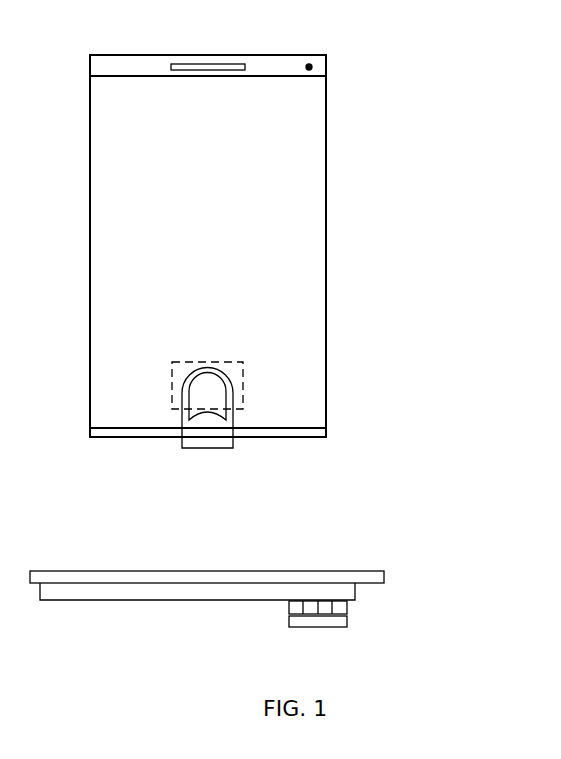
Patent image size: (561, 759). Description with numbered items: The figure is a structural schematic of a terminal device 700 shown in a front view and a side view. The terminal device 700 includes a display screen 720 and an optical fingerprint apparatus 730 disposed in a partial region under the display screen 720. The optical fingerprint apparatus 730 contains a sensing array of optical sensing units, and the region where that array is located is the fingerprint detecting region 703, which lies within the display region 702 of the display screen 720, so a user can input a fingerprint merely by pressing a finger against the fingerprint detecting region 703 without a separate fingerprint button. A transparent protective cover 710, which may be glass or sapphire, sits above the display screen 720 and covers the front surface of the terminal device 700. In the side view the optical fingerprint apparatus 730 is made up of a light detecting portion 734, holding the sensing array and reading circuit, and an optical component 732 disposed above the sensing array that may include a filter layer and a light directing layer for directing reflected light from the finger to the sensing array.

The terminal device 700 is at (215, 23).
The display region 702 is at (308, 362).
The fingerprint detecting region 703 is at (243, 385).
The transparent protective cover 710 is at (280, 67).
The display screen 720 is at (215, 600).
The optical fingerprint apparatus 730 is at (387, 624).
The optical component 732 is at (350, 607).
The light detecting portion 734 is at (350, 620).